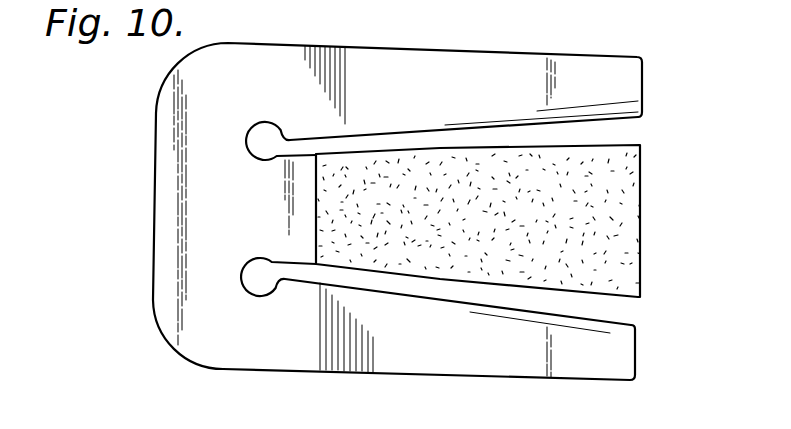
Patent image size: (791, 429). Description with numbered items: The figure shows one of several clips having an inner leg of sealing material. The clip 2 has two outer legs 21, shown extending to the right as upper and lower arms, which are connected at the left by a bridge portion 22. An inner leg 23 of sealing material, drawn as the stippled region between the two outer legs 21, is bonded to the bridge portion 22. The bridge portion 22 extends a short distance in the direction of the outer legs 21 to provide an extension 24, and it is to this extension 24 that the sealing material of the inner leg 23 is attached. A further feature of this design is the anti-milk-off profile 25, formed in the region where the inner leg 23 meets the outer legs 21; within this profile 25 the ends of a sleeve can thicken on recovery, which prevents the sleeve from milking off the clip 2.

The clip 2 is at (168, 340).
The outer legs 21 is at (495, 70).
The bridge portion 22 is at (165, 197).
The inner leg of sealing material 23 is at (623, 203).
The extension 24 is at (293, 200).
The anti-milk-off profile 25 is at (262, 284).